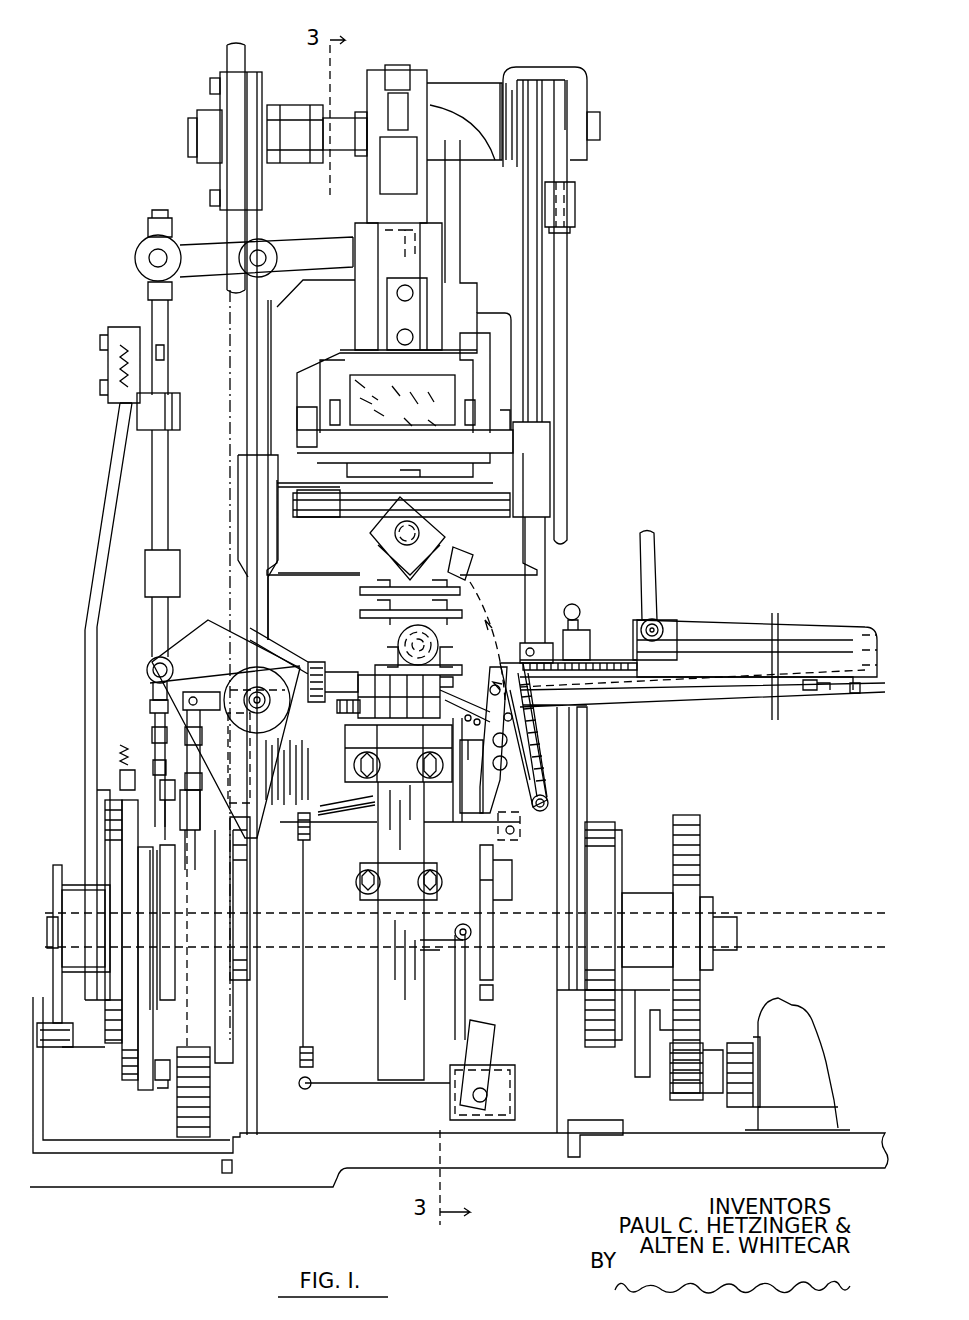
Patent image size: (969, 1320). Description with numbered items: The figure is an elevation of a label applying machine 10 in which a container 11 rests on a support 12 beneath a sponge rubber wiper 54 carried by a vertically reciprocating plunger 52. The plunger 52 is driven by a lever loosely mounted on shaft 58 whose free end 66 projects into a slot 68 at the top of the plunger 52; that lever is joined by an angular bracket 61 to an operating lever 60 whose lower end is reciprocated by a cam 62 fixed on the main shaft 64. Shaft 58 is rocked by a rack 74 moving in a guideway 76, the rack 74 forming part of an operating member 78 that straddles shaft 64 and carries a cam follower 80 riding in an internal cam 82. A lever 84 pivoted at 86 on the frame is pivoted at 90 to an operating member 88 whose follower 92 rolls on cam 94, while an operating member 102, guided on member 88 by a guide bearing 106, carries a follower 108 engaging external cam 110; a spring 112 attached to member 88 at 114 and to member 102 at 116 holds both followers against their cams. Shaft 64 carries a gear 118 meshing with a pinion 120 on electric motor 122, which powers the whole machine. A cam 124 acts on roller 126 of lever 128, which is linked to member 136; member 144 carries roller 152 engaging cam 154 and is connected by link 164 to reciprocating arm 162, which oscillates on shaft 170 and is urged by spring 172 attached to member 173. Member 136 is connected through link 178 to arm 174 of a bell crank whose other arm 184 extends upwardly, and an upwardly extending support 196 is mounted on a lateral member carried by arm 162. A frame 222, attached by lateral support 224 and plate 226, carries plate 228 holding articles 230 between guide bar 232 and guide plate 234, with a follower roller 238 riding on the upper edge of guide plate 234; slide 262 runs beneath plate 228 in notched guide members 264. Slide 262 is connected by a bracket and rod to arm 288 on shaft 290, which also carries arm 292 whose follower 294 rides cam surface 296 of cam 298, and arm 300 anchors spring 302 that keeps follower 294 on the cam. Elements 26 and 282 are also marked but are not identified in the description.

The label applying machine 10 is at (651, 282).
The bottle or other container 11 is at (437, 527).
The support 12 is at (378, 540).
The press ram 26 is at (460, 211).
The member or plunger 52 is at (372, 75).
The resilient contact member or wiper 54 is at (460, 388).
The shaft 58 is at (190, 138).
The operating lever 60 is at (578, 278).
The angular bracket 61 is at (588, 102).
The cam 62 is at (607, 882).
The shaft 64 is at (48, 925).
The free end 66 is at (415, 112).
The slot 68 is at (405, 80).
The rack 74 is at (245, 62).
The guideway 76 is at (218, 97).
The operating member 78 is at (228, 224).
The roller or cam follower 80 is at (245, 858).
The internal cam 82 is at (177, 1118).
The lever 84 is at (205, 270).
The pivot 86 is at (265, 255).
The operating member 88 is at (165, 367).
The pivot 90 is at (148, 255).
The roller or cam follower 92 is at (138, 1080).
The cam 94 is at (115, 1060).
The operating member 102 is at (85, 670).
The guide bearing 106 is at (180, 410).
The roller or cam follower 108 is at (95, 790).
The external cam 110 is at (100, 1003).
The spring 112 is at (125, 528).
The attachment point 114 is at (120, 750).
The attachment point 116 is at (128, 362).
The gear 118 is at (700, 855).
The pinion 120 is at (668, 1070).
The electric motor 122 is at (790, 1002).
The cam 124 is at (52, 975).
The cam follower or roller 126 is at (109, 940).
The lever 128 is at (50, 1044).
The member 136 is at (185, 640).
The member 144 is at (165, 795).
The cam follower or roller 152 is at (217, 830).
The cam 154 is at (175, 910).
The reciprocating arm 162 is at (216, 630).
The link 164 is at (155, 712).
The shaft 170 is at (274, 735).
The spring 172 is at (358, 818).
The member 173 is at (245, 836).
The arm 174 is at (210, 690).
The link 178 is at (295, 764).
The arm 184 is at (270, 633).
The upwardly extending support 196 is at (491, 740).
The frame 222 is at (668, 705).
The lateral support 224 is at (575, 713).
The plate 226 is at (552, 742).
The plate 228 is at (852, 690).
The articles 230 is at (607, 643).
The guide bar 232 is at (818, 650).
The guide plate 234 is at (725, 632).
The roller 238 is at (670, 620).
The slide 262 is at (755, 693).
The guide members 264 is at (808, 698).
The spring 282 is at (555, 765).
The arm 288 is at (478, 1040).
The shaft 290 is at (485, 1110).
The second arm 292 is at (455, 980).
The cam follower 294 is at (425, 950).
The cam surface 296 is at (476, 900).
The cam 298 is at (498, 985).
The laterally extending arm 300 is at (352, 1080).
The extension spring 302 is at (320, 1045).